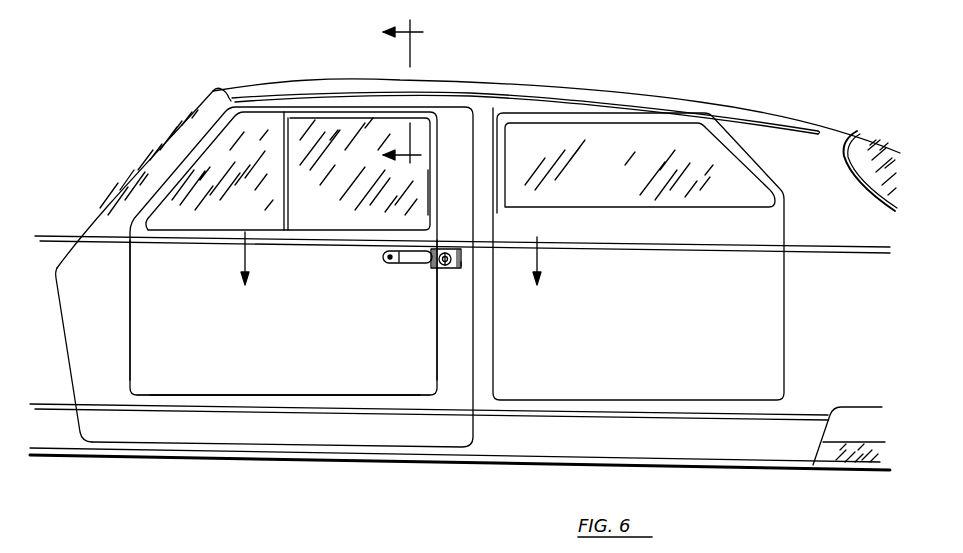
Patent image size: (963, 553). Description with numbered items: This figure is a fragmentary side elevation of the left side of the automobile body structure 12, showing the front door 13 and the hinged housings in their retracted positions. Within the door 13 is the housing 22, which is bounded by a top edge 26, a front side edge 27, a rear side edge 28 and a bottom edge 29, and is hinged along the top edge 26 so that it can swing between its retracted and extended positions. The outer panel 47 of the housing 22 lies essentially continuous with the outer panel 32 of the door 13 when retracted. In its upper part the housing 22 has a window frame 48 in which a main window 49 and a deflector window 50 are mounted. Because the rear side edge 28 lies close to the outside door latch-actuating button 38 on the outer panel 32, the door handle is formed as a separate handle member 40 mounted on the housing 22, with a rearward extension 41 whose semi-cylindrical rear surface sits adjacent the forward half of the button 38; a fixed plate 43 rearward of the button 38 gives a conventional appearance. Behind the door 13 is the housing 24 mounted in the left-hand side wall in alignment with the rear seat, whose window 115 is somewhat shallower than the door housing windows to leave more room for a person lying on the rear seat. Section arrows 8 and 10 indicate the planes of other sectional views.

The section line 8- 8 is at (387, 267).
The section line 10- 10 is at (392, 97).
The automobile body structure 12 is at (556, 72).
The front door 13 is at (85, 347).
The housing 22 is at (282, 277).
The housing 24 is at (638, 254).
The top edge 26 is at (330, 107).
The front side edge 27 is at (131, 305).
The rear side edge 28 is at (437, 343).
The bottom edge 29 is at (207, 393).
The outer panel 32 is at (307, 430).
The outside door latch-actuating button 38 is at (444, 249).
The handle member 40 is at (408, 263).
The rearward extension 41 is at (430, 268).
The fixed plate 43 is at (461, 267).
The outer panel 47 is at (283, 375).
The window frame 48 is at (428, 192).
The main window 49 is at (350, 166).
The deflector window 50 is at (222, 170).
The windows 115 is at (640, 165).